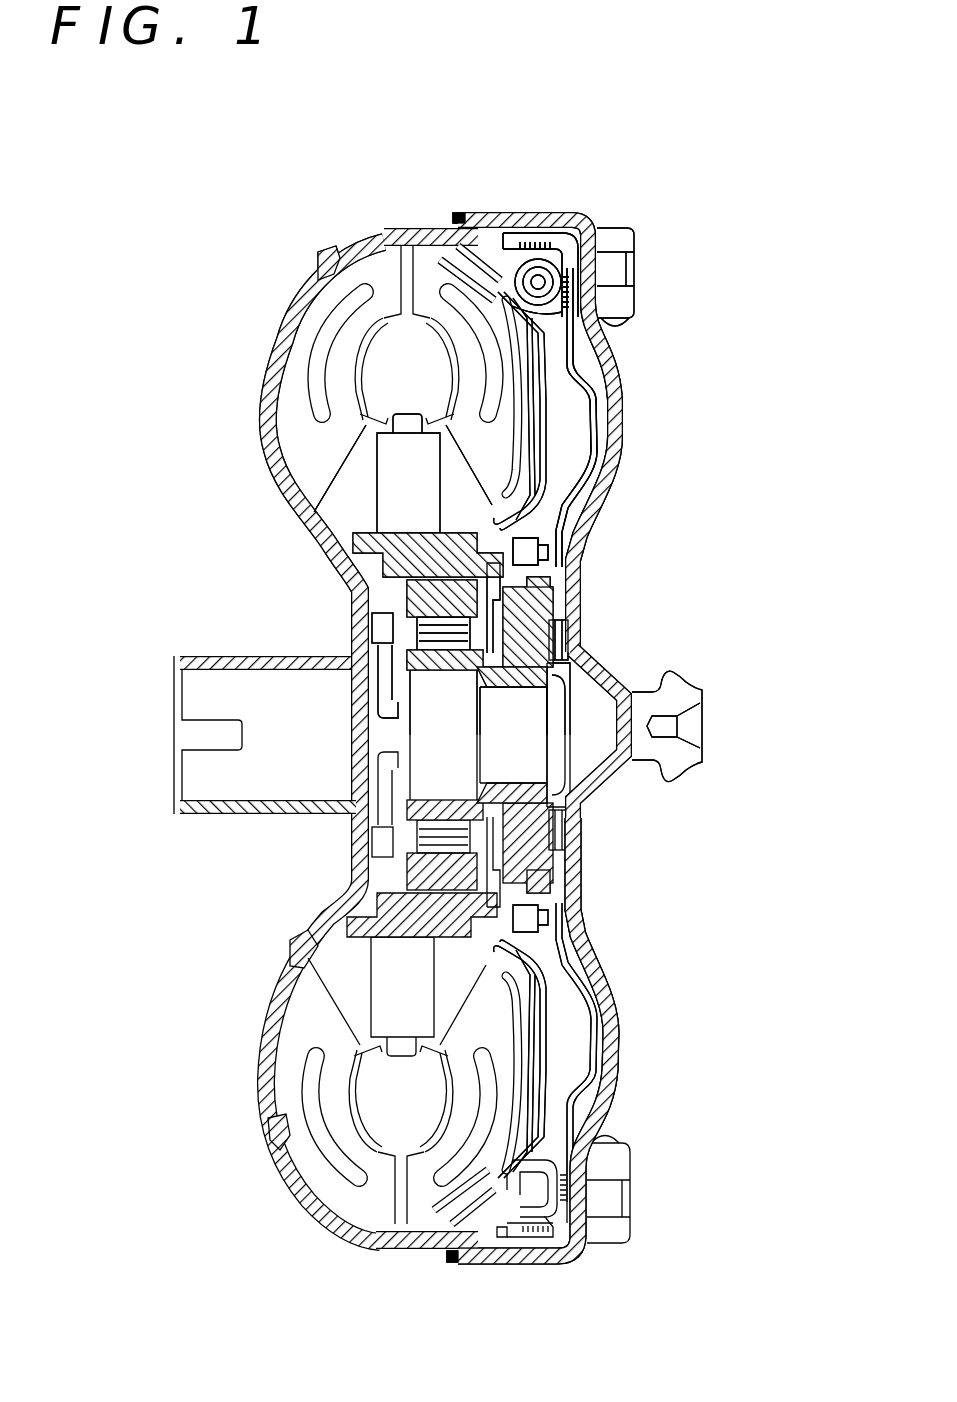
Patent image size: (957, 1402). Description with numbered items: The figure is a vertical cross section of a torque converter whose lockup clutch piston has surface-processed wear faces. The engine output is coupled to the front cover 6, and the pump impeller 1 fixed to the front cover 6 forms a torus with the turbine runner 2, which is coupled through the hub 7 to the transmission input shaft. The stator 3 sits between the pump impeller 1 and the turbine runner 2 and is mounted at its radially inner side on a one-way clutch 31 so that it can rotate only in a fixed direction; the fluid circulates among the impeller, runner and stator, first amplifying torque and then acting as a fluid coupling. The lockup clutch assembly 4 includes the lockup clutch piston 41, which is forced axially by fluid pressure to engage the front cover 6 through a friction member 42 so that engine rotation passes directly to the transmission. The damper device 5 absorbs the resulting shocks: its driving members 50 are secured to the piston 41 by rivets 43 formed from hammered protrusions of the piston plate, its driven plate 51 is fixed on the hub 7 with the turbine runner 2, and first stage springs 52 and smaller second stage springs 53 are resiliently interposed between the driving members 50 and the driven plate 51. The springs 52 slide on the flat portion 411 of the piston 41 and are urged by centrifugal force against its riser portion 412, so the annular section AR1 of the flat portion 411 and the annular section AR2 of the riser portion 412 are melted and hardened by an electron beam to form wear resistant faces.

The pump impeller 1 is at (296, 275).
The turbine runner 2 is at (490, 250).
The stator 3 is at (368, 481).
The one-way clutch 31 is at (407, 632).
The lockup clutch assembly 4 is at (598, 394).
The lockup clutch piston 41 is at (594, 480).
The flat portion 411 is at (568, 1152).
The riser portion 412 is at (541, 1264).
The friction member 42 is at (604, 330).
The rivets 43 is at (558, 1104).
The damper device 5 is at (552, 434).
The driving members 50 is at (568, 368).
The driven plate 51 is at (550, 1016).
The first stage springs 52 is at (440, 226).
The second stage springs 53 is at (408, 226).
The front cover 6 is at (578, 590).
The hub 7 is at (580, 808).
The annular section of flat portion AR1 is at (577, 240).
The annular section of riser portion AR2 is at (535, 245).